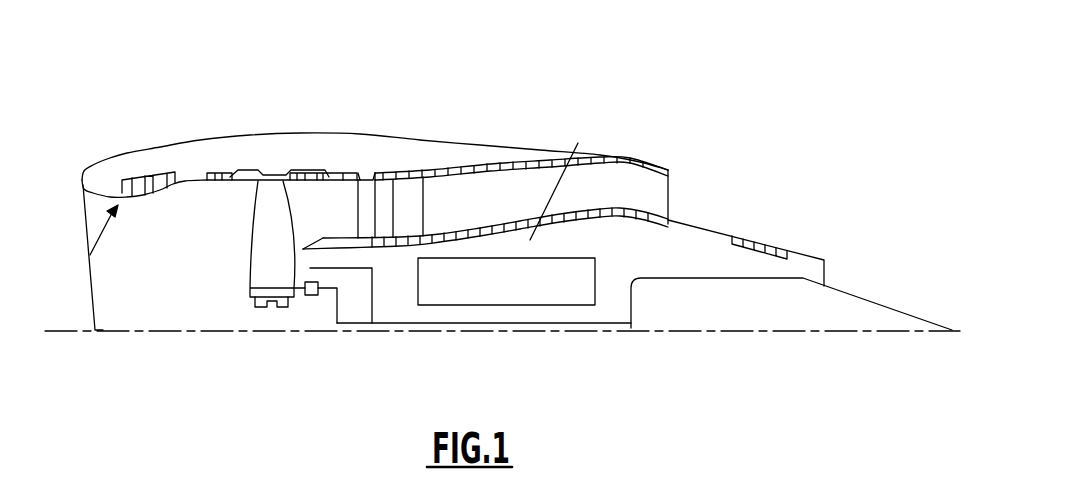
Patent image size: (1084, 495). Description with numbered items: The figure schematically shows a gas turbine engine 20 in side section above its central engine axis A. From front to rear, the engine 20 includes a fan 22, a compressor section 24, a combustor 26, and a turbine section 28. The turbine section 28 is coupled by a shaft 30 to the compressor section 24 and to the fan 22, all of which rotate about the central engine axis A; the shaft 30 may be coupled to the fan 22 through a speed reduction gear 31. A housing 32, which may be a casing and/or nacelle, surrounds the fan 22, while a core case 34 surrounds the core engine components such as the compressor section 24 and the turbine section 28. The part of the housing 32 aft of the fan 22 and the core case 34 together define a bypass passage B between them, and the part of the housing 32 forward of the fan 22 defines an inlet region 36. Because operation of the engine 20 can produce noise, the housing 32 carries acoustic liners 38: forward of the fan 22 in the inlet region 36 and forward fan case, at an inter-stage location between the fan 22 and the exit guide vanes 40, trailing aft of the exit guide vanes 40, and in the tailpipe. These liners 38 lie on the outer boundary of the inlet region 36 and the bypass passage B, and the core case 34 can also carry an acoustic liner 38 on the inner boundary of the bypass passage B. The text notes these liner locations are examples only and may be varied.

The gas turbine engine 20 is at (707, 135).
The fan 22 is at (263, 276).
The compressor section 24 is at (345, 268).
The combustor 26 is at (524, 295).
The turbine section 28 is at (695, 278).
The shaft 30 is at (513, 325).
The speed reduction gear 31 is at (308, 296).
The housing 32 is at (298, 153).
The core case 34 is at (578, 143).
The inlet region 36 is at (90, 252).
The acoustic liner 38 is at (217, 172).
The exit guide vanes 40 is at (393, 195).
The central engine axis A is at (173, 333).
The bypass passage B is at (476, 217).